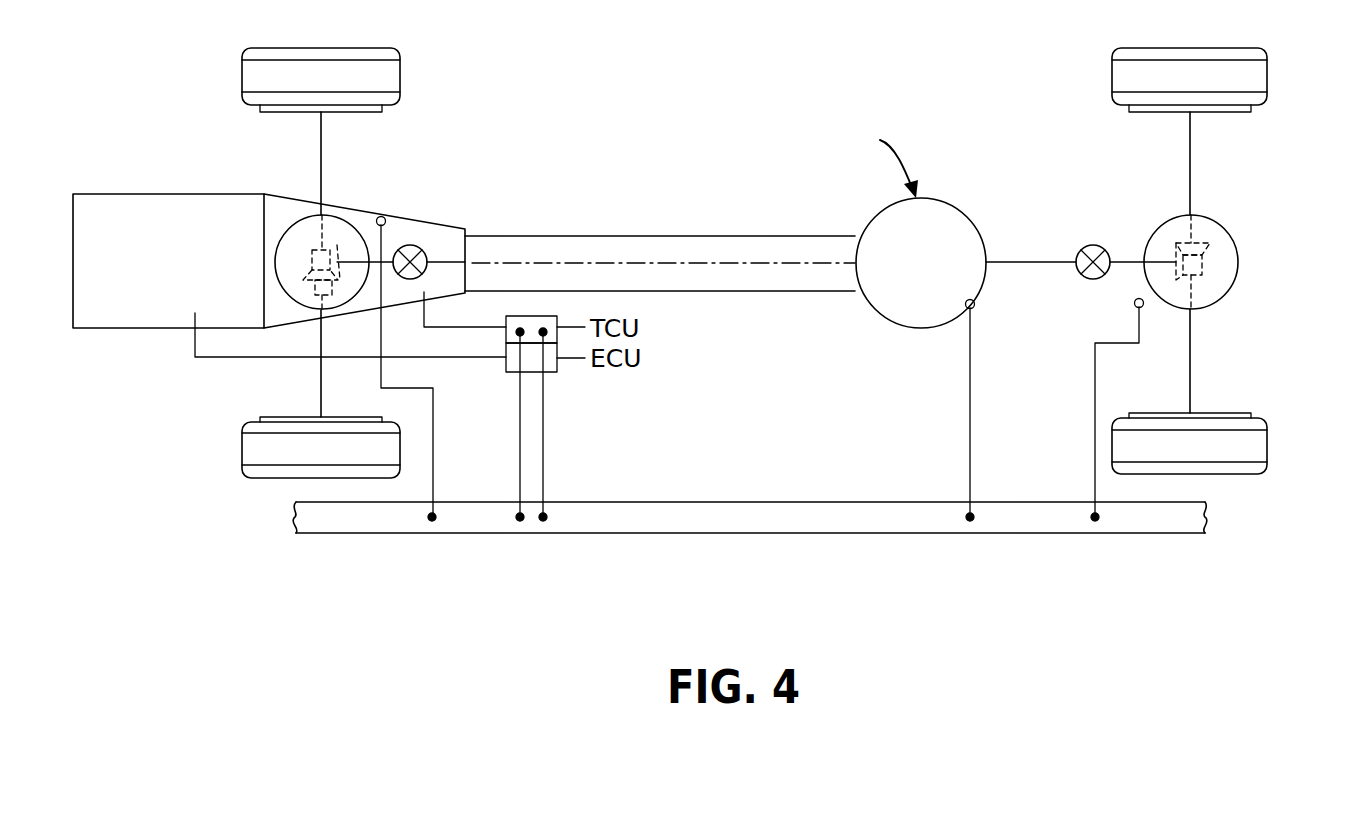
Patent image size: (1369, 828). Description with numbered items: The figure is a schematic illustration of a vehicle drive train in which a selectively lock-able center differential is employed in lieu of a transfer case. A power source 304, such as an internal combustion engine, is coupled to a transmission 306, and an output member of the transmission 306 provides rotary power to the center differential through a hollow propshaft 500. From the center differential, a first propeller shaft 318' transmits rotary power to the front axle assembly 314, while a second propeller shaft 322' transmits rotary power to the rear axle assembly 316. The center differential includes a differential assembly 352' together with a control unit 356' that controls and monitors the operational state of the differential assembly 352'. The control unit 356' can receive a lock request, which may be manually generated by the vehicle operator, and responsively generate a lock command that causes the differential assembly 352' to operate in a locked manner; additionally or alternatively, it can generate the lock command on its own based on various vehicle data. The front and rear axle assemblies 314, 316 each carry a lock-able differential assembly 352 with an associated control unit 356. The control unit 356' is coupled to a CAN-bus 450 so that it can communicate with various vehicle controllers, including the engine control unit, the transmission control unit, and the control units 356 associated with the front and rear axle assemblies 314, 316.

The power source 304 is at (130, 313).
The transmission 306 is at (278, 305).
The front axle assembly 314 is at (334, 172).
The rear axle assembly 316 is at (1212, 194).
The first propeller shaft 318' is at (663, 316).
The second propeller shaft 322' is at (1048, 242).
The differential assembly 352 is at (732, 262).
The differential assembly 352' is at (951, 229).
The control unit 356 is at (760, 347).
The control unit 356' is at (1014, 401).
The CAN-bus 450 is at (1026, 512).
The hollow propshaft 500 is at (693, 236).